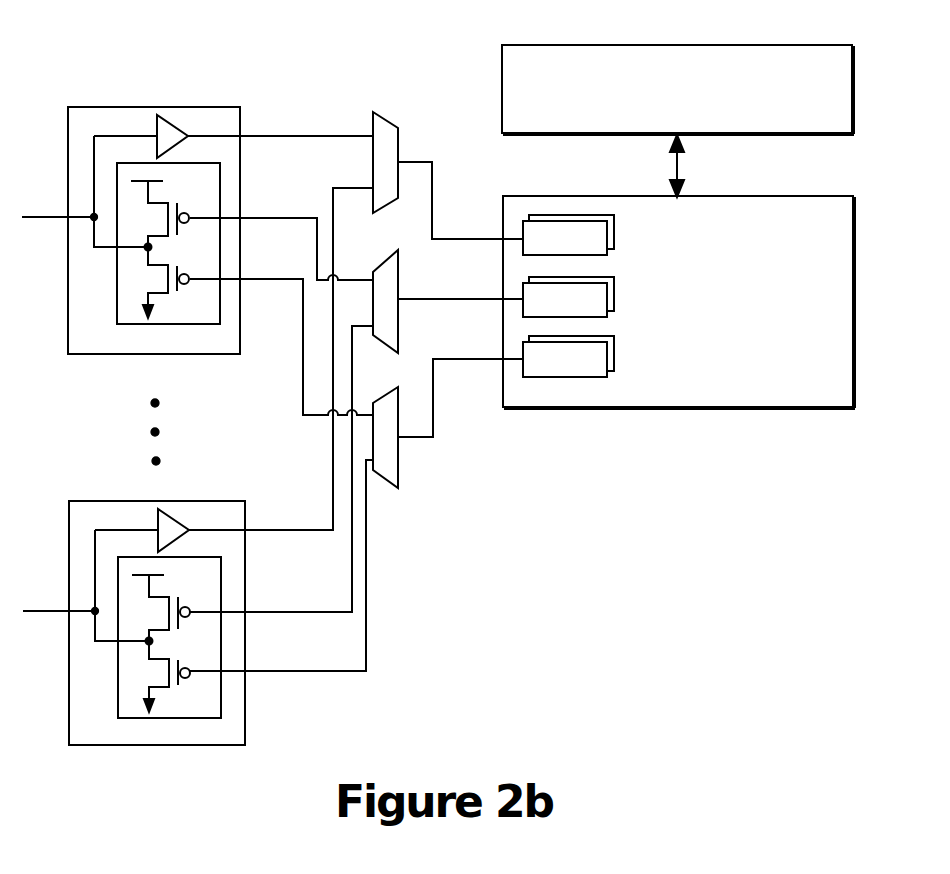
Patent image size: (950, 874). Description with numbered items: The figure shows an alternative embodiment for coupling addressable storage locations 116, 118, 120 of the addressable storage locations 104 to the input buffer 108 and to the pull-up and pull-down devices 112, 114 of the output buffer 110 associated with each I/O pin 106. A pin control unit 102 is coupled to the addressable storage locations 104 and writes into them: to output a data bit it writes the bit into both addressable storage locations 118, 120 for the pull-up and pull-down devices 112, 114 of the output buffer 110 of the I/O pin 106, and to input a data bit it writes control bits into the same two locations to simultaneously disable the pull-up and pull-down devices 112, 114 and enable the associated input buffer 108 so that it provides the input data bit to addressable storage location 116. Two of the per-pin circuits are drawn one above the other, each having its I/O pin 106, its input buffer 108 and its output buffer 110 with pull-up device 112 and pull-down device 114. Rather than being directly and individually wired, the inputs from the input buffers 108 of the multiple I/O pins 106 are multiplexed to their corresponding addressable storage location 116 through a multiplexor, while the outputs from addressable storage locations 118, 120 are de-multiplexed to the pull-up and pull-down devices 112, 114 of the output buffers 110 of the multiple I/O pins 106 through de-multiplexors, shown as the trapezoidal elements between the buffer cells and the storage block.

The pin control unit 102 is at (833, 53).
The addressable storage locations 104 is at (833, 203).
The I/O pin 106 is at (47, 220).
The input buffer 108 is at (167, 112).
The output buffer 110 is at (170, 315).
The pull-up device 112 is at (173, 196).
The pull-down device 114 is at (173, 297).
The addressable storage location 116 is at (532, 214).
The addressable storage location 118 is at (523, 286).
The addressable storage location 120 is at (523, 347).